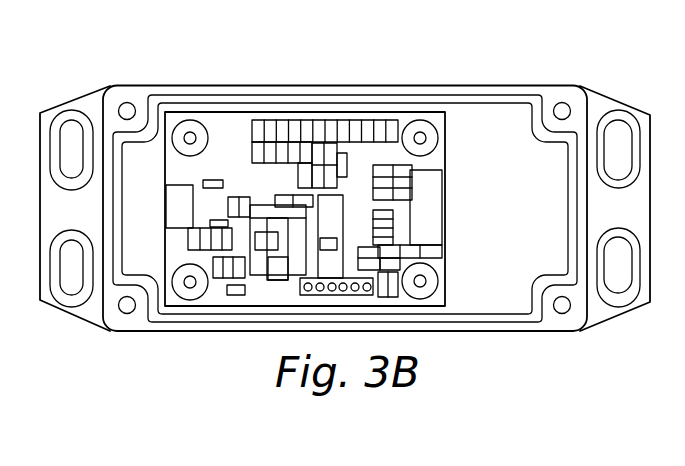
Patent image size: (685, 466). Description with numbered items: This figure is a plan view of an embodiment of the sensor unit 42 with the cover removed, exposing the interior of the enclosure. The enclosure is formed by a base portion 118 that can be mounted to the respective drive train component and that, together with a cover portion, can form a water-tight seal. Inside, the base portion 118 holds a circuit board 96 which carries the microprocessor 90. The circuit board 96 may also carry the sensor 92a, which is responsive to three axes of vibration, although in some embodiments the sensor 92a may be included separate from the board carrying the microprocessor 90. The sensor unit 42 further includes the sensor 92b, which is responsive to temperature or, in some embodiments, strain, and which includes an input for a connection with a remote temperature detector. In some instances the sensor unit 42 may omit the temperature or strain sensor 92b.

The sensor unit 42 is at (277, 75).
The base portion 118 is at (620, 90).
The circuit board 96 is at (440, 158).
The sensor 92a is at (338, 232).
The sensor 92b is at (180, 188).
The microprocessor 90 is at (261, 244).